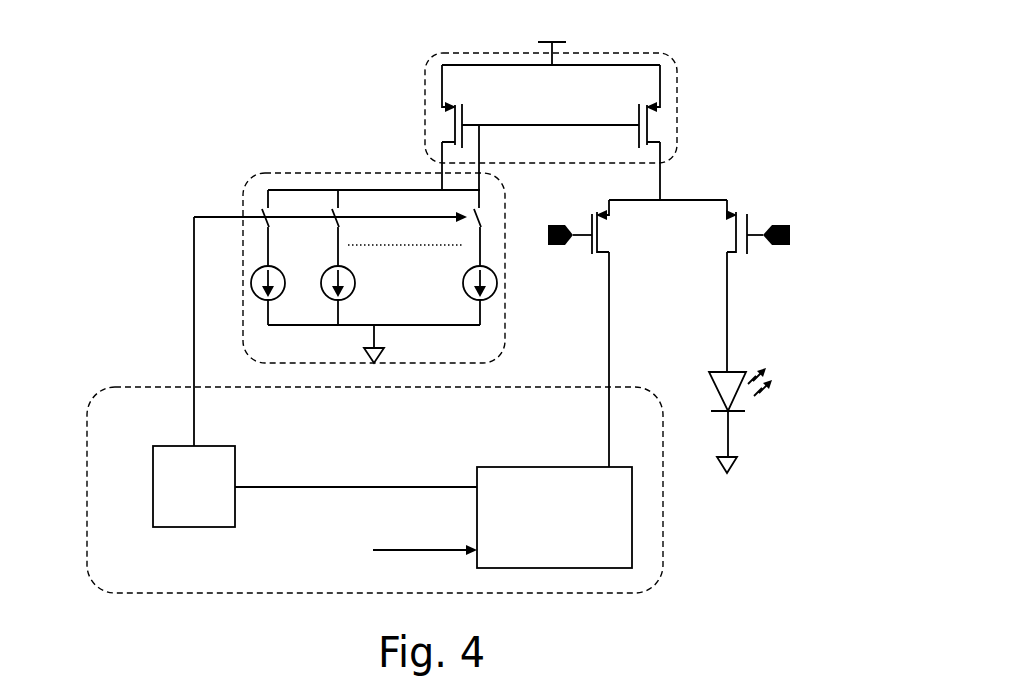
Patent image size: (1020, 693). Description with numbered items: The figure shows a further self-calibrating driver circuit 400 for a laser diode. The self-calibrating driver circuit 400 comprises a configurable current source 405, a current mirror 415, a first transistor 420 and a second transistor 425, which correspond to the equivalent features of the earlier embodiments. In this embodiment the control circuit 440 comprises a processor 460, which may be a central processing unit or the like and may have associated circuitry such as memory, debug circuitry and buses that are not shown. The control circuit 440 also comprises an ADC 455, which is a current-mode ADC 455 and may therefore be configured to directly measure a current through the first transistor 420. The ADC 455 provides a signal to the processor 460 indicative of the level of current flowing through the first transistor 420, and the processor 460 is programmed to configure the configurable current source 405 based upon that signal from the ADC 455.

The self-calibrating driver circuit 400 is at (112, 81).
The configurable current source 405 is at (242, 200).
The current mirror 415 is at (452, 53).
The first transistor 420 is at (598, 202).
The second transistor 425 is at (737, 212).
The control circuit 440 is at (120, 593).
The ADC 455 is at (588, 518).
The processor 460 is at (215, 473).